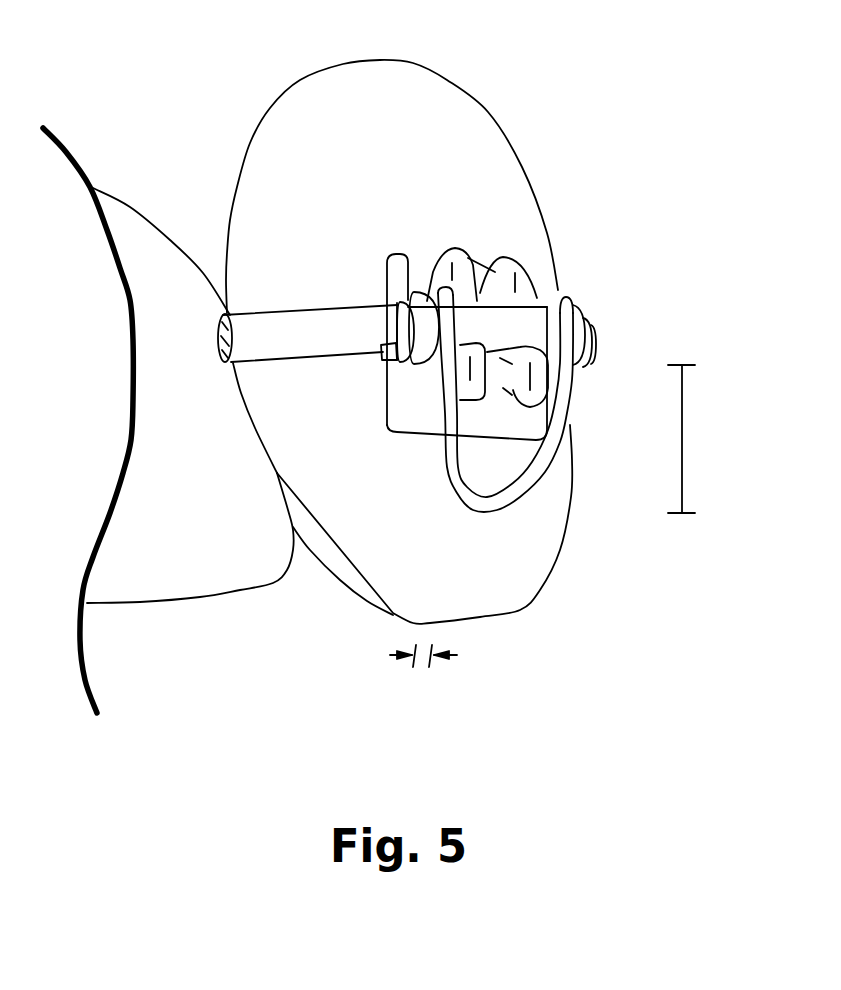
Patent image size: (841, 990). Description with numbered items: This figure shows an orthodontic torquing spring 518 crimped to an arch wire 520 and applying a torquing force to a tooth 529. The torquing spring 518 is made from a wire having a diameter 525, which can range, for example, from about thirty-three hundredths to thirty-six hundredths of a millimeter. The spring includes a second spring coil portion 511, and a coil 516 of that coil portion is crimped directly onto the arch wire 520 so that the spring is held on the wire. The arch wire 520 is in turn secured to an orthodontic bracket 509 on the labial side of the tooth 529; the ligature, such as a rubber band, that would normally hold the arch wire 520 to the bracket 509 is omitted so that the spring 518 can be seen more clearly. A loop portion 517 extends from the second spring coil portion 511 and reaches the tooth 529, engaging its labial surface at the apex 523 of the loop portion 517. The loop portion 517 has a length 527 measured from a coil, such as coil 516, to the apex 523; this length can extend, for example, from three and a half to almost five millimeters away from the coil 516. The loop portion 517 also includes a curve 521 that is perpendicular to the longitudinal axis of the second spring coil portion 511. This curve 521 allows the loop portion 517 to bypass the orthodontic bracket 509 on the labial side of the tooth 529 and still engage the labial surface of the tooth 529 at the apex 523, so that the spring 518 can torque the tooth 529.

The orthodontic bracket 509 is at (497, 277).
The second spring coil portion 511 is at (412, 262).
The coil 516 is at (412, 262).
The loop portion 517 is at (413, 467).
The orthodontic torquing spring 518 is at (657, 330).
The arch wire 520 is at (347, 330).
The curve 521 is at (573, 437).
The apex 523 is at (475, 522).
The diameter 525 is at (423, 667).
The length 527 is at (683, 439).
The tooth 529 is at (260, 217).